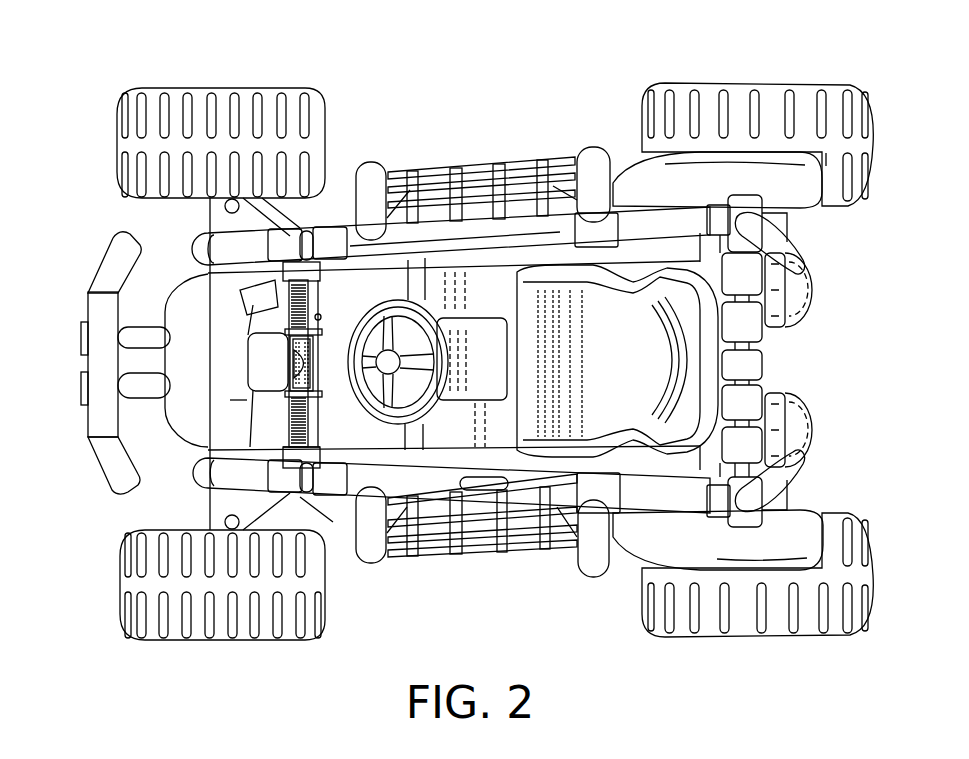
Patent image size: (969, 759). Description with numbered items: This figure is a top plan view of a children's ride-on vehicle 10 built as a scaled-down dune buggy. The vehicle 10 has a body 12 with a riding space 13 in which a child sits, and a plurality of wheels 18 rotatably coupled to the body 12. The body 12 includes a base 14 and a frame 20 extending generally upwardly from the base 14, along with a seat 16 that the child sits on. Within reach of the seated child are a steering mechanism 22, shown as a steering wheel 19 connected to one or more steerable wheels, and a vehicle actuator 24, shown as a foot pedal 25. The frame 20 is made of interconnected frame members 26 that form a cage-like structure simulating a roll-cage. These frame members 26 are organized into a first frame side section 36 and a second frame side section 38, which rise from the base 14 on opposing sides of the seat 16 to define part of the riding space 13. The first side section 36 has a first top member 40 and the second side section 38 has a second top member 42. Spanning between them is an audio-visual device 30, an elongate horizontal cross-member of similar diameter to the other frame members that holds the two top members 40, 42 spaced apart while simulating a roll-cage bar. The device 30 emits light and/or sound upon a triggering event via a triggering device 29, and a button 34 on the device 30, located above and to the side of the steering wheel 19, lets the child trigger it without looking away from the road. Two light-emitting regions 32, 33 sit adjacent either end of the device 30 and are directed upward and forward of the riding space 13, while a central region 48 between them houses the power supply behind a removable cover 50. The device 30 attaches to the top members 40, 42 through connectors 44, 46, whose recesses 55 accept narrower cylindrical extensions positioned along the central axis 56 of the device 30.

The ride-on vehicle 10 is at (410, 95).
The body 12 is at (183, 450).
The riding space 13 is at (487, 265).
The base 14 is at (332, 290).
The seat 16 is at (618, 352).
The wheels 18 is at (123, 140).
The steering wheel 19 is at (453, 168).
The frame 20 is at (587, 585).
The steering mechanism 22 is at (413, 297).
The vehicle actuator 24 is at (233, 305).
The foot pedal 25 is at (293, 307).
The frame members 26 is at (764, 353).
The triggering device 29 is at (320, 318).
The audio-visual device 30 is at (283, 325).
The light-emitting region 32 is at (296, 424).
The light-emitting region 33 is at (270, 256).
The button 34 is at (357, 160).
The first frame side section 36 is at (433, 562).
The second frame side section 38 is at (558, 152).
The first top member 40 is at (637, 500).
The second top member 42 is at (637, 220).
The connector 44 is at (297, 483).
The connector 46 is at (287, 247).
The central region 48 is at (285, 328).
The removable cover 50 is at (288, 345).
The recesses 55 is at (306, 262).
The central axis 56 is at (345, 422).